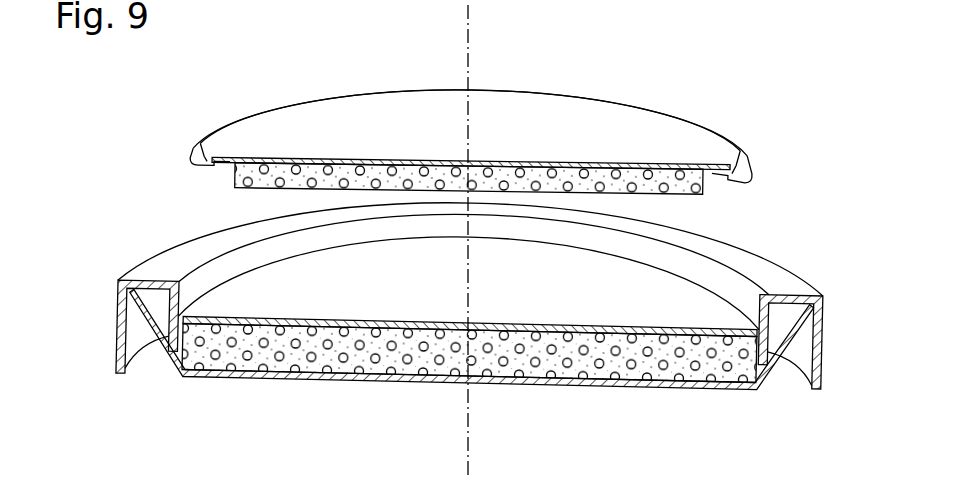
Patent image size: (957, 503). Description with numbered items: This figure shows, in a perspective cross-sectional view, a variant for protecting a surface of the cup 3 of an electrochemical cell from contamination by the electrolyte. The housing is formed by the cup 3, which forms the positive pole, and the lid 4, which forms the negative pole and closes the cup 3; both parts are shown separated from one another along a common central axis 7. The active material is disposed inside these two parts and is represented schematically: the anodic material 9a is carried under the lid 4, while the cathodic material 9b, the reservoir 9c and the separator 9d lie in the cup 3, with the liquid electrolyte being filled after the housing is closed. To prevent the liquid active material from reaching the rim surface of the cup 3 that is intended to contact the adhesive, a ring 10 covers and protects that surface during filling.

The cup 3 is at (208, 396).
The lid 4 is at (620, 124).
The central axis 7 is at (469, 20).
The anodic material 9a is at (705, 190).
The cathodic material 9b is at (309, 348).
The reservoir 9c is at (423, 338).
The separator 9d is at (470, 327).
The ring 10 is at (788, 275).